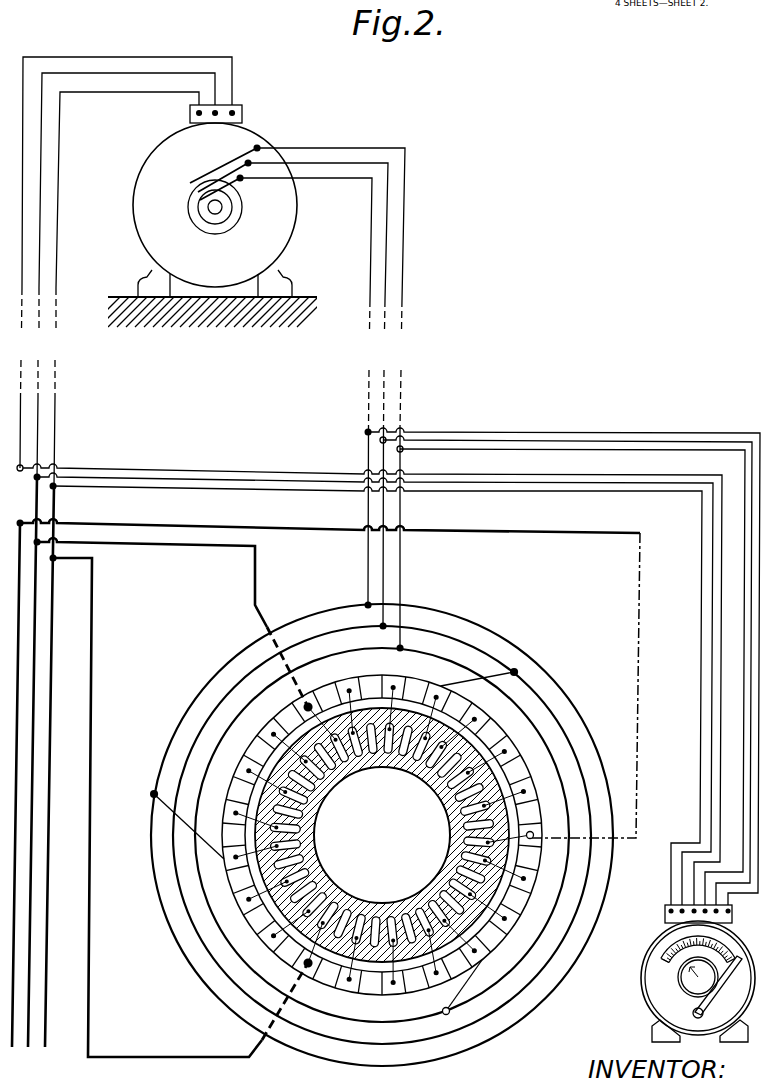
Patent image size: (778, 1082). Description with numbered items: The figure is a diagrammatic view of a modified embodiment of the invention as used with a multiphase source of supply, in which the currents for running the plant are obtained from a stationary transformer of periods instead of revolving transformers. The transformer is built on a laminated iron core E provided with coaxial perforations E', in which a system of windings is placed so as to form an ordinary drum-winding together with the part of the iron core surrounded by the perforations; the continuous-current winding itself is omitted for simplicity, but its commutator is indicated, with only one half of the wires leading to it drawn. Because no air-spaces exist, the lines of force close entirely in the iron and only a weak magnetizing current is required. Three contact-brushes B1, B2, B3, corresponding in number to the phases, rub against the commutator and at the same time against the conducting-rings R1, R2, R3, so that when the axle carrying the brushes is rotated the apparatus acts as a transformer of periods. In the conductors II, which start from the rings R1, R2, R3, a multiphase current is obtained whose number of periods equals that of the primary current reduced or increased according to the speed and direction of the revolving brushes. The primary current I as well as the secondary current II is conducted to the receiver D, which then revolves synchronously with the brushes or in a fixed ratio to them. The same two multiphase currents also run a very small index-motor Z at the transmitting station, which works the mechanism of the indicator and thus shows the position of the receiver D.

The receiver D is at (163, 168).
The primary current conductors I is at (122, 568).
The secondary current conductors II is at (322, 398).
The conducting-ring R1 is at (219, 667).
The conducting-ring R2 is at (323, 630).
The conducting-ring R3 is at (422, 652).
The contact-brush B1 is at (154, 794).
The contact-brush B2 is at (514, 672).
The contact-brush B3 is at (466, 993).
The laminated iron core E is at (382, 835).
The coaxial perforations E' is at (383, 834).
The index-motor Z is at (698, 973).